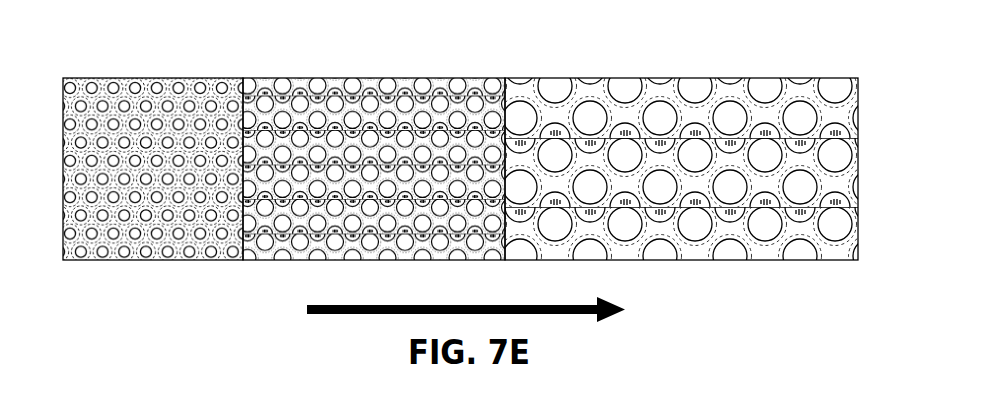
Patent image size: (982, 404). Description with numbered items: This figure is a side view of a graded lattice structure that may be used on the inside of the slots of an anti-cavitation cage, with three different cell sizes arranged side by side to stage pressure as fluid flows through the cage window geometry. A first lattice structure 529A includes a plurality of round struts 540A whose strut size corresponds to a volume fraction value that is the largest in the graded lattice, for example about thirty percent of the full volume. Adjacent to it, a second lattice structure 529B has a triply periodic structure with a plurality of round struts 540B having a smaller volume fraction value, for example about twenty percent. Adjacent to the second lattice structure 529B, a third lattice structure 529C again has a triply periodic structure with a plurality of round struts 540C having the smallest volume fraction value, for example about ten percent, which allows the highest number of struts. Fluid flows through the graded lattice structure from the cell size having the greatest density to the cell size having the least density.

The plurality of round struts 540A is at (729, 61).
The plurality of round struts 540B is at (409, 60).
The plurality of round struts 540C is at (182, 60).
The first lattice structure 529A is at (765, 253).
The second lattice structure 529B is at (478, 257).
The third lattice structure 529C is at (197, 257).